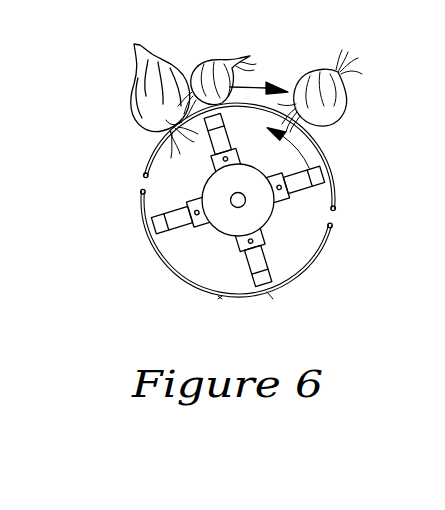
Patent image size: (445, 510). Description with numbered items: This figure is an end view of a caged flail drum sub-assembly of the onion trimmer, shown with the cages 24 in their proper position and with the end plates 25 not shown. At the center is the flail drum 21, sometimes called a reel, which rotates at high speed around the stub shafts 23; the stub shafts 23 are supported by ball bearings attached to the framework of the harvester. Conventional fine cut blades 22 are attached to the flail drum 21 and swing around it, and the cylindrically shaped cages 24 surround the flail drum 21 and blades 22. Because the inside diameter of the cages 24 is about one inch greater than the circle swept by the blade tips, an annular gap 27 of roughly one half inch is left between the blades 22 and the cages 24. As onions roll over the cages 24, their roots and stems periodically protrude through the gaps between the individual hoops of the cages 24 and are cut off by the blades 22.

The flail drum 21 is at (203, 190).
The blades 22 is at (153, 223).
The stub shafts 23 is at (245, 204).
The cages 24 is at (320, 147).
The end plates 25 is at (0, 43).
The annular gap 27 is at (270, 296).